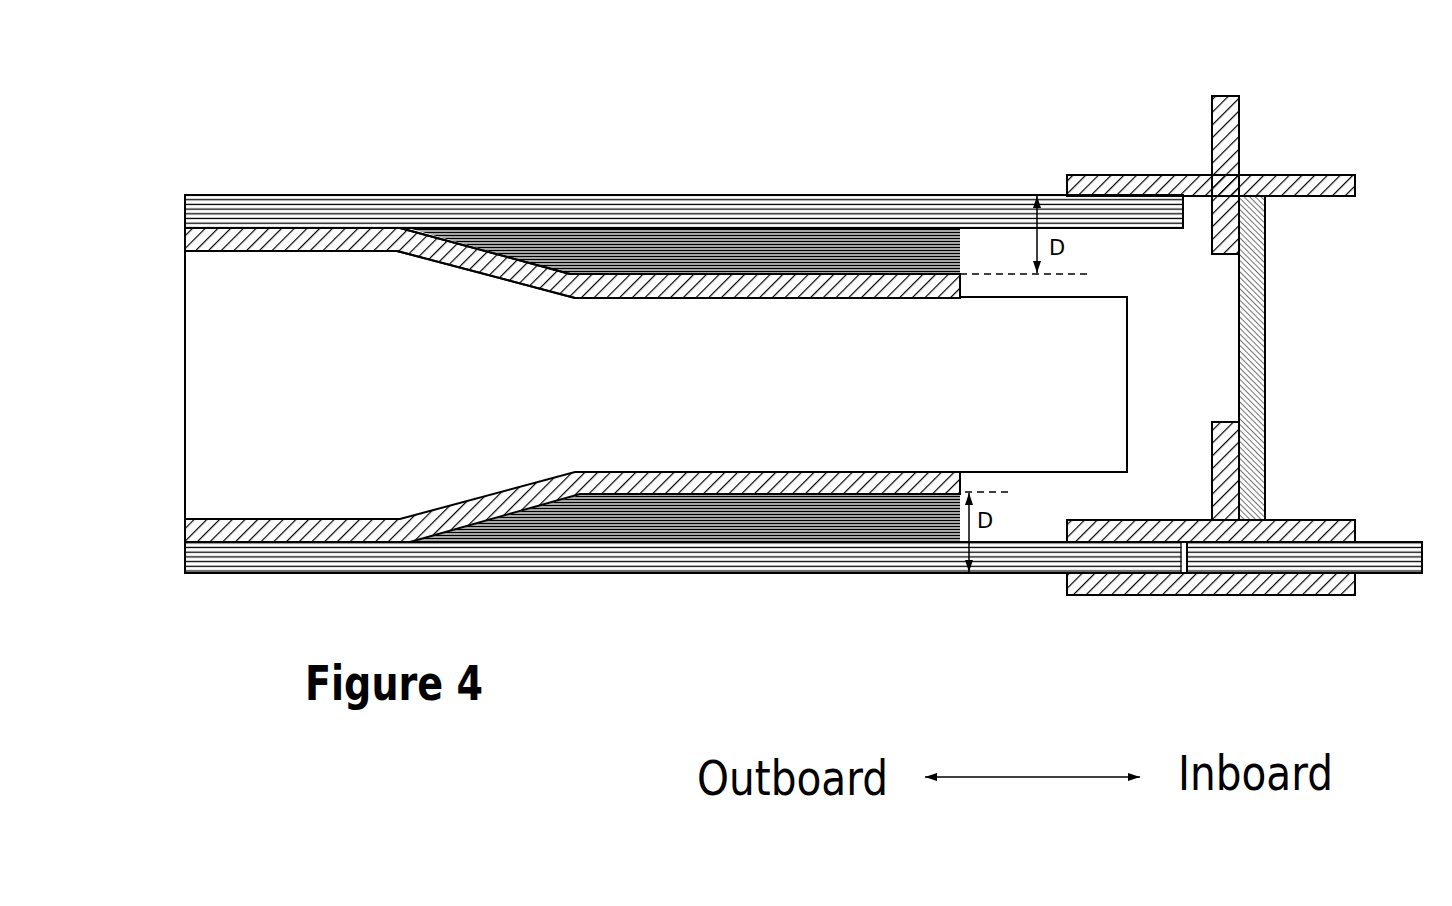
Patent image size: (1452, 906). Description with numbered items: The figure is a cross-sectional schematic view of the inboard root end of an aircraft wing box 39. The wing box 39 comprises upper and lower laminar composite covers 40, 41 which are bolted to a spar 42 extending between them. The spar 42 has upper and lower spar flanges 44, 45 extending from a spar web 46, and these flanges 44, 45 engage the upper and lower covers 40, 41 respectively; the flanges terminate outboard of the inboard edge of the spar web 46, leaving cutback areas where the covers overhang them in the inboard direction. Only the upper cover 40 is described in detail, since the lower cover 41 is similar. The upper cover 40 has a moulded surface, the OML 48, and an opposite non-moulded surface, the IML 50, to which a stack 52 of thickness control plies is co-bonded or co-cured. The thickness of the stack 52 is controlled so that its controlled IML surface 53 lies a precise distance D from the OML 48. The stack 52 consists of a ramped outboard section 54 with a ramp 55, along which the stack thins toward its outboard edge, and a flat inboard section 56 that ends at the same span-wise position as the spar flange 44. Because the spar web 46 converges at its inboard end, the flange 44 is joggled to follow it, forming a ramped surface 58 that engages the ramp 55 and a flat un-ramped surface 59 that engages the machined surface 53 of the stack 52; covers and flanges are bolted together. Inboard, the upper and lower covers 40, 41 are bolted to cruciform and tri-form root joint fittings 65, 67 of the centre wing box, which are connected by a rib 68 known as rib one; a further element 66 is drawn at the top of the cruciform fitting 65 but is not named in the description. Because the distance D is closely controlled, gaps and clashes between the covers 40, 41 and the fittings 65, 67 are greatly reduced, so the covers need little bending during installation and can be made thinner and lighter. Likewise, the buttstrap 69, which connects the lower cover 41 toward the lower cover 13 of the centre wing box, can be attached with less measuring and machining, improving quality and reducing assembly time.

The lower cover of the centre wing box 13 is at (1370, 548).
The wing box 39 is at (773, 145).
The upper cover 40 is at (307, 205).
The lower cover 41 is at (535, 558).
The spar 42 is at (172, 490).
The upper spar flange 44 is at (185, 238).
The lower spar flange 45 is at (183, 535).
The spar web 46 is at (230, 352).
The moulded surface (OML) 48 is at (837, 195).
The non-moulded surface (IML) 50 is at (1122, 232).
The stack of thickness control plies 52 is at (962, 260).
The controlled IML surface 53 is at (950, 298).
The ramped outboard section 54 is at (497, 227).
The ramp 55 is at (515, 283).
The flat inboard section 56 is at (870, 227).
The ramped surface 58 is at (502, 255).
The flat un-ramped surface 59 is at (658, 275).
The cruciform root joint fitting 65 is at (1238, 178).
The rib 66 is at (1195, 97).
The tri-form root joint fitting 67 is at (1335, 518).
The rib 68 is at (1258, 370).
The buttstrap 69 is at (1245, 593).